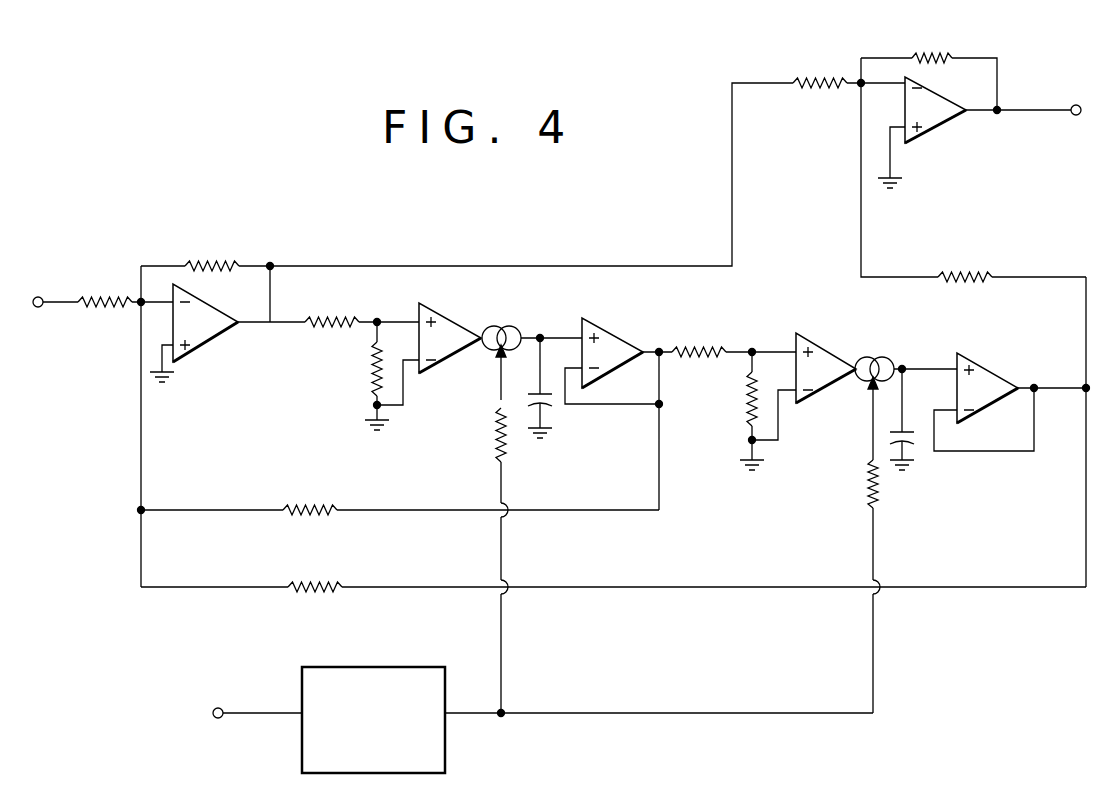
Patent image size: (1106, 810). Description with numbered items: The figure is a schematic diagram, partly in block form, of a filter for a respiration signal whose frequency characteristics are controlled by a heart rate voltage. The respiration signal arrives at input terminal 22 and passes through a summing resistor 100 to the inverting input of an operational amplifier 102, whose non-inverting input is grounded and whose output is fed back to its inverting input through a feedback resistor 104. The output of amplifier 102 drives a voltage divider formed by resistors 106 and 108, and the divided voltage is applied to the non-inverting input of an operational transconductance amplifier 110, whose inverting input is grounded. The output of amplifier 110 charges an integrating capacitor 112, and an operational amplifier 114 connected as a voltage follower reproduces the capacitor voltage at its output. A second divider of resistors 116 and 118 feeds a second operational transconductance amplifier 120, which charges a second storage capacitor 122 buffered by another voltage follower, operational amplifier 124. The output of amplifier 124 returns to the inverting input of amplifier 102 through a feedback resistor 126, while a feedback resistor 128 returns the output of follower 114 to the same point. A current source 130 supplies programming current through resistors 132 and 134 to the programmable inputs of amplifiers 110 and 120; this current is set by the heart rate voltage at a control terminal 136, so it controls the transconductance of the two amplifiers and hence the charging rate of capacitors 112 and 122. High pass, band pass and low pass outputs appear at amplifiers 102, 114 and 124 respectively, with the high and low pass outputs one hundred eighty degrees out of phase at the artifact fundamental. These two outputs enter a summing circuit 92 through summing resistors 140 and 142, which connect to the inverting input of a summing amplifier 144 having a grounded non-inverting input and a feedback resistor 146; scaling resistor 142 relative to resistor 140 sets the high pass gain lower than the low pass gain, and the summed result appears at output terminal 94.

The input terminal 22 is at (36, 289).
The summing circuit 92 is at (945, 145).
The output terminal 94 is at (1028, 110).
The summing resistor 100 is at (110, 300).
The operational amplifier 102 is at (202, 350).
The feedback resistor 104 is at (202, 262).
The resistor 106 is at (336, 318).
The resistor 108 is at (372, 374).
The operational transconductance amplifier 110 is at (442, 318).
The integrating capacitor 112 is at (544, 404).
The operational amplifier 114 is at (608, 332).
The resistor 116 is at (701, 350).
The resistor 118 is at (750, 404).
The second operational transconductance amplifier 120 is at (814, 348).
The second storage capacitor 122 is at (909, 448).
The operational amplifier 124 is at (989, 358).
The feedback resistor 126 is at (325, 586).
The feedback resistor 128 is at (311, 506).
The current source 130 is at (395, 761).
The resistor 132 is at (497, 439).
The resistor 134 is at (868, 491).
The control terminal 136 is at (282, 713).
The summing resistor 140 is at (826, 80).
The summing resistor 142 is at (961, 275).
The summing amplifier 144 is at (944, 120).
The feedback resistor 146 is at (950, 38).